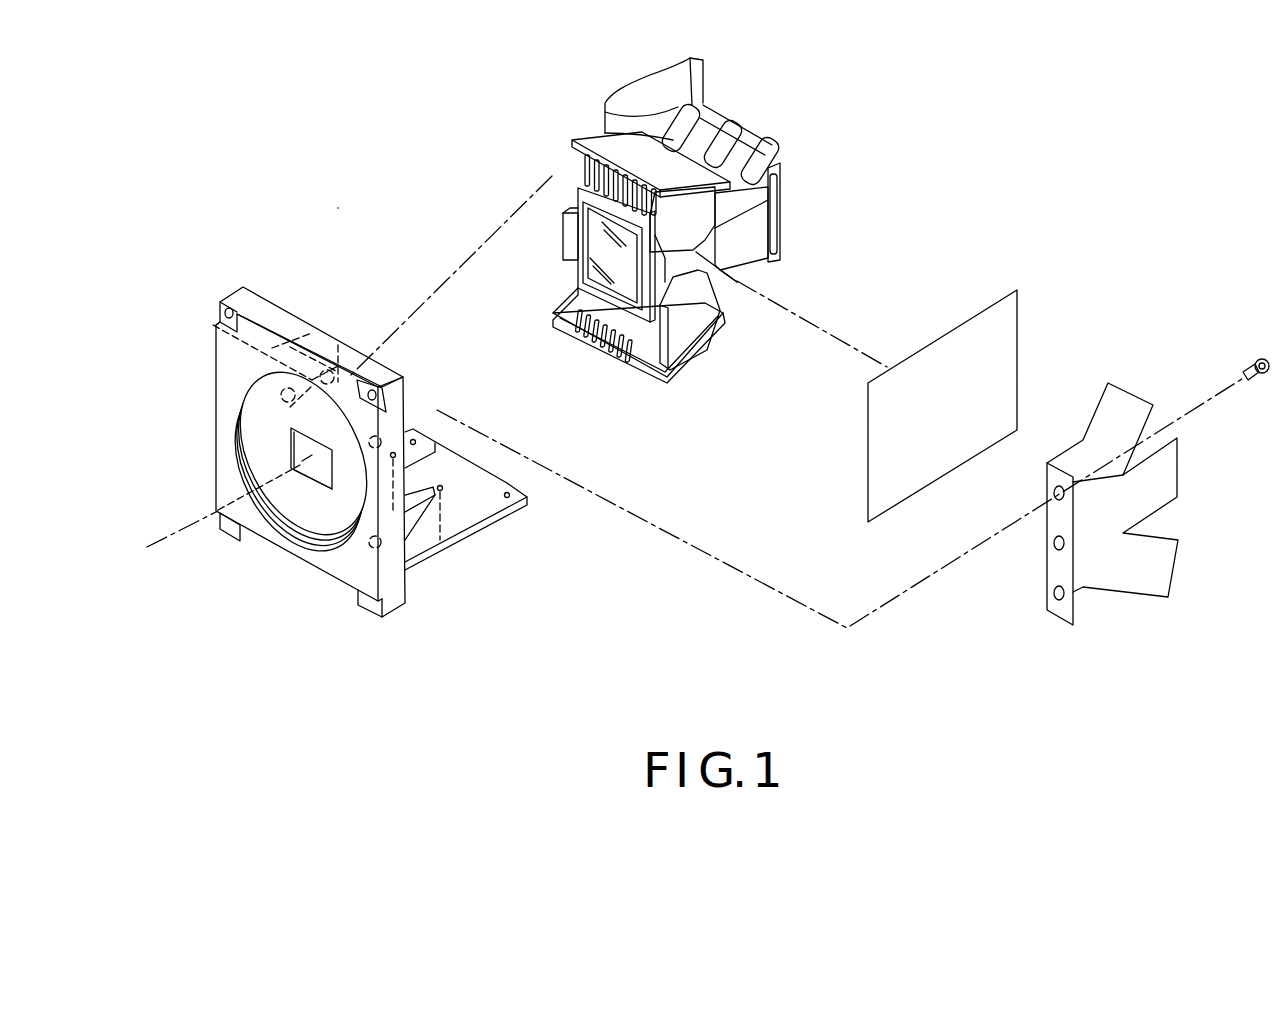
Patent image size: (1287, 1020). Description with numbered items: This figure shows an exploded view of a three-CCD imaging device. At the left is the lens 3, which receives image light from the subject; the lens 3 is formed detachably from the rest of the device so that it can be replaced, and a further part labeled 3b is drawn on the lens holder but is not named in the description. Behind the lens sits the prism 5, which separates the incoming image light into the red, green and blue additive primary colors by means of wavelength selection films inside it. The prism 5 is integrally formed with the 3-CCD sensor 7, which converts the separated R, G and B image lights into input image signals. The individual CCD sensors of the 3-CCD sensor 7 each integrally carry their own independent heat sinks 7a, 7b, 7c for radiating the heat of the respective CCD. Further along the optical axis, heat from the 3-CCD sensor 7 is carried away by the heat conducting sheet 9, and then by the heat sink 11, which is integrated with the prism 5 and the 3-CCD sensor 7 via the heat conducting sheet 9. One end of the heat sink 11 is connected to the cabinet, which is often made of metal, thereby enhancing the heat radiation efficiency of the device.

The lens 3 is at (307, 517).
The side rail of holder 3b is at (413, 593).
The prism 5 is at (598, 242).
The 3-CCD sensor 7 is at (677, 220).
The heat sink 7a is at (690, 230).
The heat sink 7b is at (755, 238).
The heat sink 7c is at (693, 325).
The heat conducting sheet 9 is at (1002, 355).
The heat sink 11 is at (1133, 403).